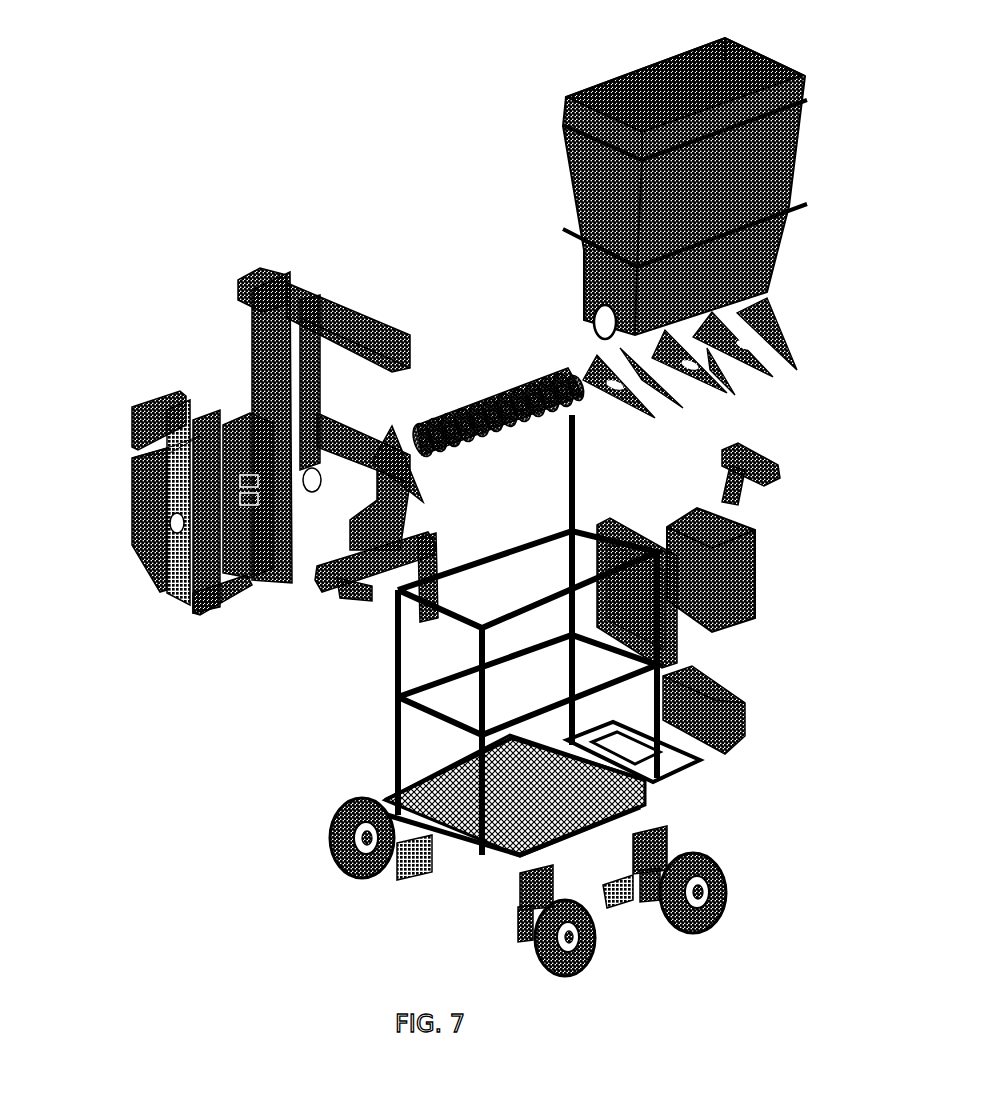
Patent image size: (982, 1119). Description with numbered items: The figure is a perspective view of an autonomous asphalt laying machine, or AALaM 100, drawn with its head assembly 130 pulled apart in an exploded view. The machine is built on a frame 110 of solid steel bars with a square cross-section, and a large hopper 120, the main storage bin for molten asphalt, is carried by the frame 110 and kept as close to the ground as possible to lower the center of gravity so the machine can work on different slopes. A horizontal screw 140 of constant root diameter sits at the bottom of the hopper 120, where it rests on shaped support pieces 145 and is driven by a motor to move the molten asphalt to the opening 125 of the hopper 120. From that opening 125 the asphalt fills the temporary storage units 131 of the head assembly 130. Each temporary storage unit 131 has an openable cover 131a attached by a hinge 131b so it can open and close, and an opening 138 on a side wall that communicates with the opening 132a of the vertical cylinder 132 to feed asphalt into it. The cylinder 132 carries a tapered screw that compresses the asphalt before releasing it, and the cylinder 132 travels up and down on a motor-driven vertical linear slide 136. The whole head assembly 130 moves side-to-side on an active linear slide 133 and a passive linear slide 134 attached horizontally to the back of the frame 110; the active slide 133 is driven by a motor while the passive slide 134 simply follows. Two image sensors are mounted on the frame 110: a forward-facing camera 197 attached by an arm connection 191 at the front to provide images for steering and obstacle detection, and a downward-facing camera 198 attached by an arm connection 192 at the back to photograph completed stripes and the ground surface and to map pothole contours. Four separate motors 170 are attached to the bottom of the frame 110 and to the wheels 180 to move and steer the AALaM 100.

The AALaM 100 is at (150, 120).
The frame 110 is at (384, 677).
The hopper 120 is at (570, 96).
The opening of the hopper 125 is at (586, 323).
The head assembly 130 is at (271, 463).
The temporary storage unit 131 is at (136, 570).
The openable cover 131a is at (156, 395).
The hinge 131b is at (132, 448).
The vertical cylinder 132 is at (246, 372).
The opening of the cylinder 132a is at (308, 512).
The active linear slide 133 is at (348, 305).
The passive linear slide 134 is at (428, 472).
The vertical linear slide 136 is at (324, 380).
The opening on side wall 138 is at (175, 537).
The screw 140 is at (487, 396).
The support pieces 145 is at (659, 417).
The motors 170 is at (630, 914).
The wheels 180 is at (722, 918).
The arm connection 191 is at (750, 503).
The arm connection 192 is at (440, 543).
The forward-facing camera 197 is at (793, 488).
The downward-facing camera 198 is at (352, 606).